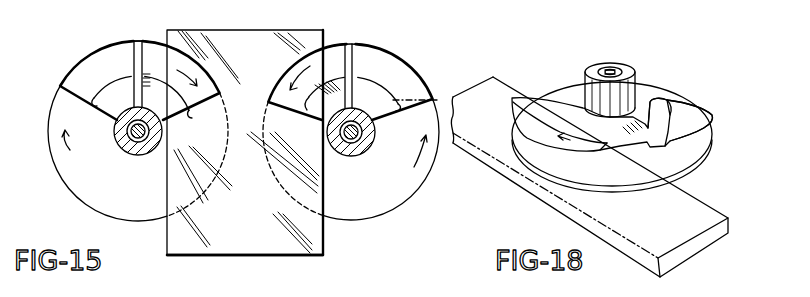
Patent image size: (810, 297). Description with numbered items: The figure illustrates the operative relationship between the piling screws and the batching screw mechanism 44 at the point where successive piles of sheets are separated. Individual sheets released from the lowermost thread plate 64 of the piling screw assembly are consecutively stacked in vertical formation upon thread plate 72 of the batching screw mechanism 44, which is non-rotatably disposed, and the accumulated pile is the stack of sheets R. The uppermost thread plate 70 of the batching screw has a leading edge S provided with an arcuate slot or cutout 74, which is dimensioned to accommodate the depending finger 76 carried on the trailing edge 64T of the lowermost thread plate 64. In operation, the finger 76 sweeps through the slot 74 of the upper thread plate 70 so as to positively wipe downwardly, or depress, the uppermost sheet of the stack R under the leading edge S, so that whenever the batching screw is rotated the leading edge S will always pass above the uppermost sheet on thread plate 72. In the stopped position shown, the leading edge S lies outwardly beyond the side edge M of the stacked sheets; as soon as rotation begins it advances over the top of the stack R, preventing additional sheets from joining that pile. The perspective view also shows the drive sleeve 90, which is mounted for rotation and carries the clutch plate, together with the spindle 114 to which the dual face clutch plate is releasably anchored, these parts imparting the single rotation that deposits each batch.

In FIG. 18, the batching screw mechanism 44 is at (724, 163).
In FIG. 15, the lowermost thread plate 64 is at (220, 93).
In FIG. 18, the lowermost thread plate 64 is at (530, 113).
In FIG. 15, the trailing edge 64T is at (373, 113).
In FIG. 18, the trailing edge 64T is at (657, 143).
In FIG. 15, the uppermost thread plate 70 is at (87, 70).
In FIG. 18, the uppermost thread plate 70 is at (707, 128).
In FIG. 15, the thread plate 72 is at (140, 220).
In FIG. 18, the thread plate 72 is at (647, 185).
In FIG. 15, the arcuate slot 74 is at (92, 100).
In FIG. 18, the arcuate slot 74 is at (670, 115).
In FIG. 15, the finger 76 is at (187, 113).
In FIG. 18, the finger 76 is at (640, 137).
In FIG. 18, the drive sleeve 90 is at (625, 68).
In FIG. 18, the spindle 114 is at (607, 70).
In FIG. 15, the leading edge S is at (131, 70).
In FIG. 15, the side edge M is at (167, 246).
In FIG. 15, the stack of sheets R is at (293, 257).